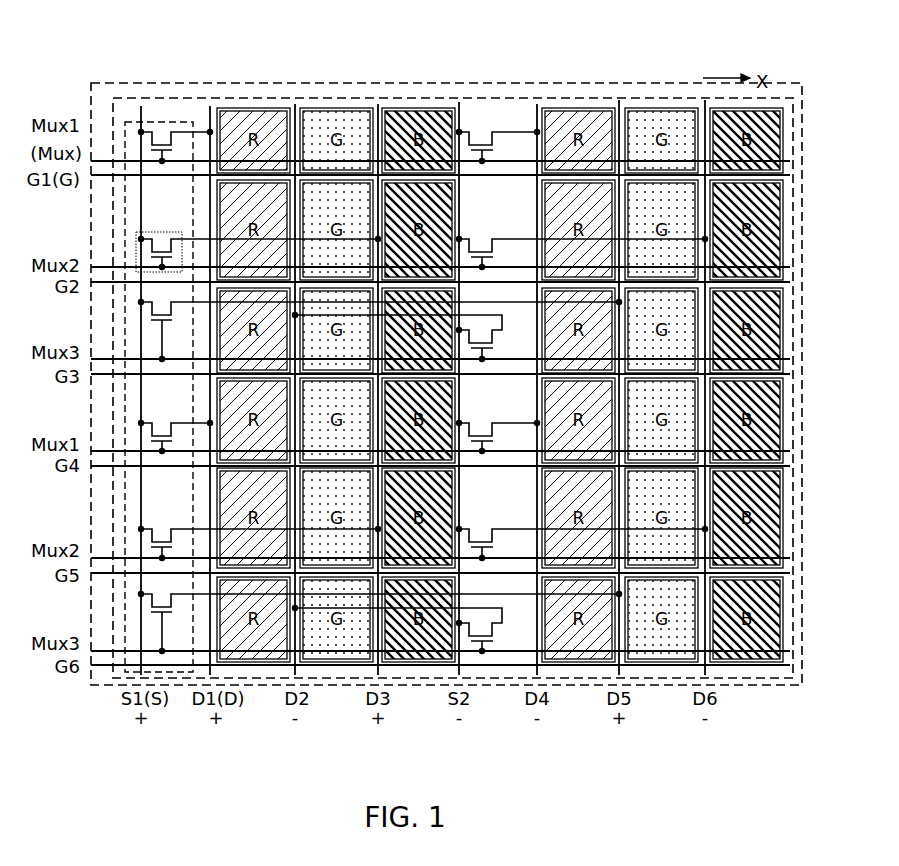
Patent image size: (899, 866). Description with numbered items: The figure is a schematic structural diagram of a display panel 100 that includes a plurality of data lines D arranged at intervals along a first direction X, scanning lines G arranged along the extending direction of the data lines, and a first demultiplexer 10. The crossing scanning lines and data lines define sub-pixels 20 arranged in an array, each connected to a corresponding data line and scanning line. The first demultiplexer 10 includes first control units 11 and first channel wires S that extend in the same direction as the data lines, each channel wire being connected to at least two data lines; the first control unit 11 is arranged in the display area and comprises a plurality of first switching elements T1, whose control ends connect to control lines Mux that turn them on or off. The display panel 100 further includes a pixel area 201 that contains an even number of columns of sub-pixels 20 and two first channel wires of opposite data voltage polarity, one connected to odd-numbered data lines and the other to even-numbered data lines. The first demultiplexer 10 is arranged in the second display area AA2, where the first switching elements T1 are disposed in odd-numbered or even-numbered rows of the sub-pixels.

The display panel 100 is at (153, 51).
The sub-pixel 20 is at (250, 115).
The pixel area 201 is at (487, 98).
The second display area AA2 is at (366, 98).
The first switching element T1 is at (139, 244).
The first control unit 11 is at (126, 654).
The first demultiplexer 10 is at (152, 726).